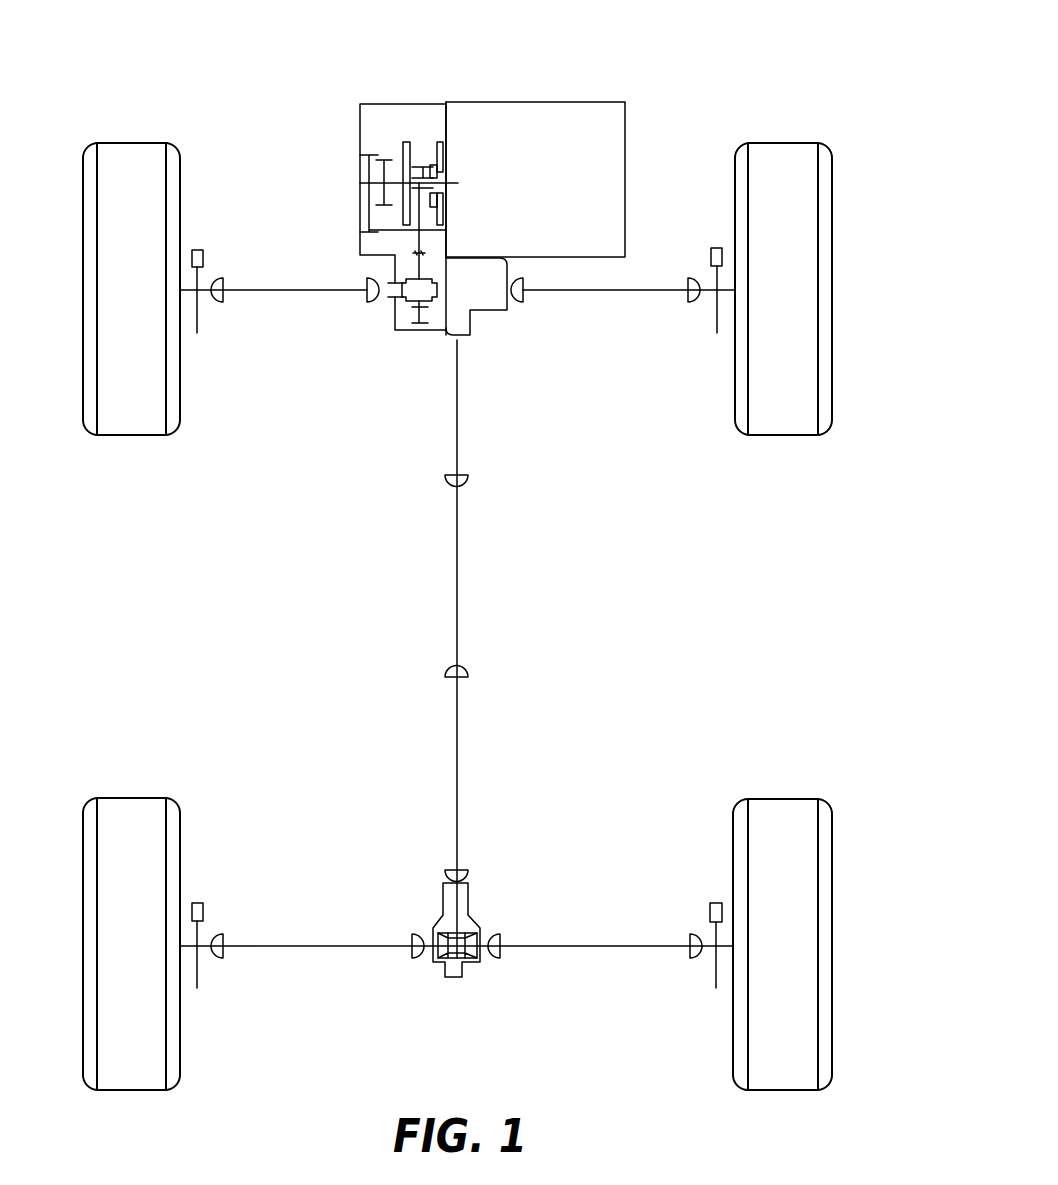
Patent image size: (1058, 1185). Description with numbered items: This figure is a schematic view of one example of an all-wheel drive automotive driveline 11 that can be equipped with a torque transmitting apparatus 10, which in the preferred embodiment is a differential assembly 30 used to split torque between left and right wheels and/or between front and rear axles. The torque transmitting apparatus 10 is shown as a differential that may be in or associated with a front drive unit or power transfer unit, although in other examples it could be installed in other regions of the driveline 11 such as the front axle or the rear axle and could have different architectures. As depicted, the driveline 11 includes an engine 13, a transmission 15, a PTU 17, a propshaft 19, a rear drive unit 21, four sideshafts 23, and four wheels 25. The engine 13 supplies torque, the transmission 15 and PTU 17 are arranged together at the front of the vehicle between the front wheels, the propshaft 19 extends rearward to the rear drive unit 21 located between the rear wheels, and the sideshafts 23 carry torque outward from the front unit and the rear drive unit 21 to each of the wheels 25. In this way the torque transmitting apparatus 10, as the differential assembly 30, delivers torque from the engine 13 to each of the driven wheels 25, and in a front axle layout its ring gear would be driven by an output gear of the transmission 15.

The torque transmitting apparatus 10 is at (496, 265).
The differential assembly 30 is at (496, 265).
The driveline 11 is at (852, 104).
The engine 13 is at (625, 128).
The transmission 15 is at (360, 173).
The PTU 17 is at (488, 312).
The propshaft 19 is at (457, 732).
The rear drive unit 21 is at (477, 928).
The sideshafts 23 is at (283, 293).
The wheels 25 is at (128, 437).